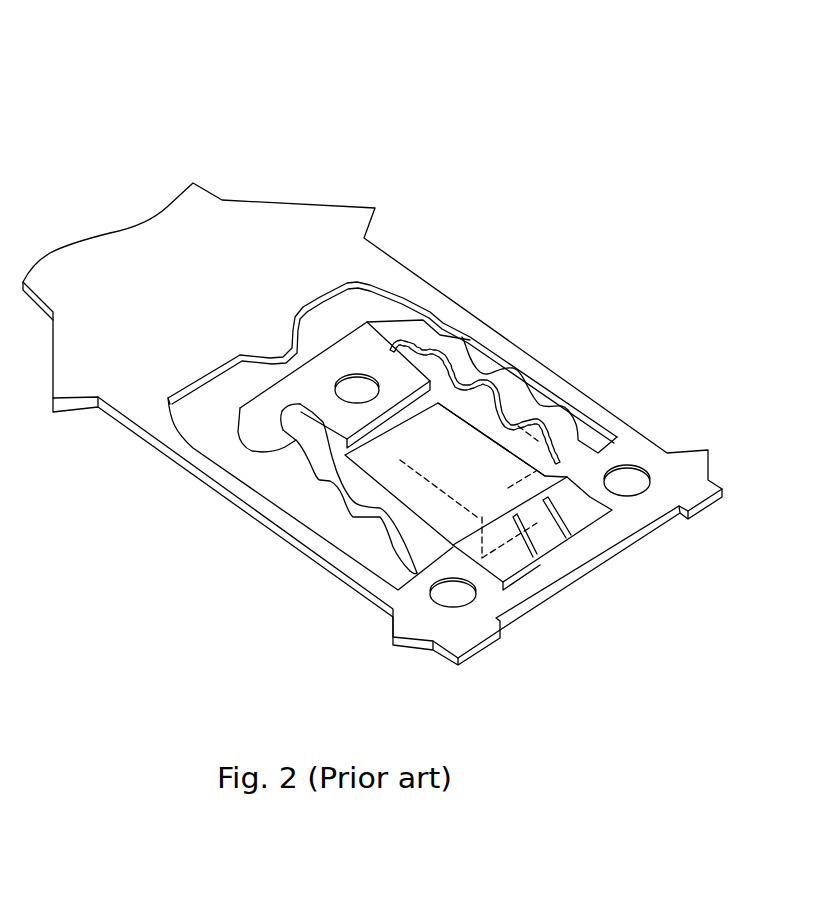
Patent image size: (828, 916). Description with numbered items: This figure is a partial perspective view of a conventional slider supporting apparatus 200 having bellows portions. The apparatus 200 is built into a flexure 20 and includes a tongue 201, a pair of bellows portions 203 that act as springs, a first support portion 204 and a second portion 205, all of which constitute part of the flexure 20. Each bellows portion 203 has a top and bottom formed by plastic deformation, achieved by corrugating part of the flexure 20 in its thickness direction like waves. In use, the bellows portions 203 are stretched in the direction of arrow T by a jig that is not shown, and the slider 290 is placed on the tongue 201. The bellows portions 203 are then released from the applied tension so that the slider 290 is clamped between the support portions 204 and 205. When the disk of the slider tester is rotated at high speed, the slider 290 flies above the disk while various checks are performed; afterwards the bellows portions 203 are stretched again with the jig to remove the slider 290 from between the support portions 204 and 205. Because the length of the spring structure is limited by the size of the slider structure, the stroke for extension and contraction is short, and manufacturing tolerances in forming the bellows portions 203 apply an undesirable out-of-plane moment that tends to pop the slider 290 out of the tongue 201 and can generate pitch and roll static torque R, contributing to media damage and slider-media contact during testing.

The slider supporting apparatus 200 is at (55, 40).
The flexure 20 is at (223, 233).
The tongue 201 is at (460, 453).
The bellows portion 203 is at (460, 362).
The first support portion 204 is at (540, 545).
The second portion 205 is at (300, 416).
The slider 290 is at (423, 482).
The stretching direction arrow T is at (358, 391).
The pitch and roll static torque R is at (391, 397).